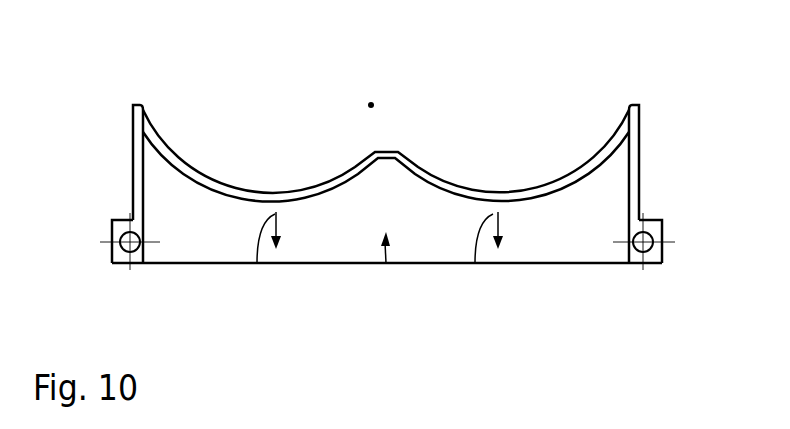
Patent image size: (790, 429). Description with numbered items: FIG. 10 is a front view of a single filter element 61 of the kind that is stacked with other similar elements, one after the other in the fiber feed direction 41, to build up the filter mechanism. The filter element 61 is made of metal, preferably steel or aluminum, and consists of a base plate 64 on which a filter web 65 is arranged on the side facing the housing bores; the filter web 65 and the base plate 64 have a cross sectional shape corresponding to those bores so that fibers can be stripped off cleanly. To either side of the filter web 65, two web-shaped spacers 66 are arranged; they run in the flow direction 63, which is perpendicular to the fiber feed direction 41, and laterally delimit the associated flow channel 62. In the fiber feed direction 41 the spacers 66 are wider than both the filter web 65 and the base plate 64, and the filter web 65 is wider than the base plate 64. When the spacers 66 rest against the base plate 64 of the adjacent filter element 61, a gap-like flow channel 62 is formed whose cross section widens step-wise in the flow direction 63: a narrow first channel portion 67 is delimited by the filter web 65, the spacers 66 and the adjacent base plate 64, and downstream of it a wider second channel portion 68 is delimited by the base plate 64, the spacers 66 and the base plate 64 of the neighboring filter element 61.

The fiber feed direction 41 is at (371, 105).
The filter element 61 is at (387, 194).
The flow channel 62 is at (383, 263).
The flow direction 63 is at (257, 263).
The base plate 64 is at (559, 255).
The filter web 65 is at (538, 183).
The spacer 66 is at (137, 180).
The first channel portion 67 is at (257, 190).
The second channel portion 68 is at (186, 254).